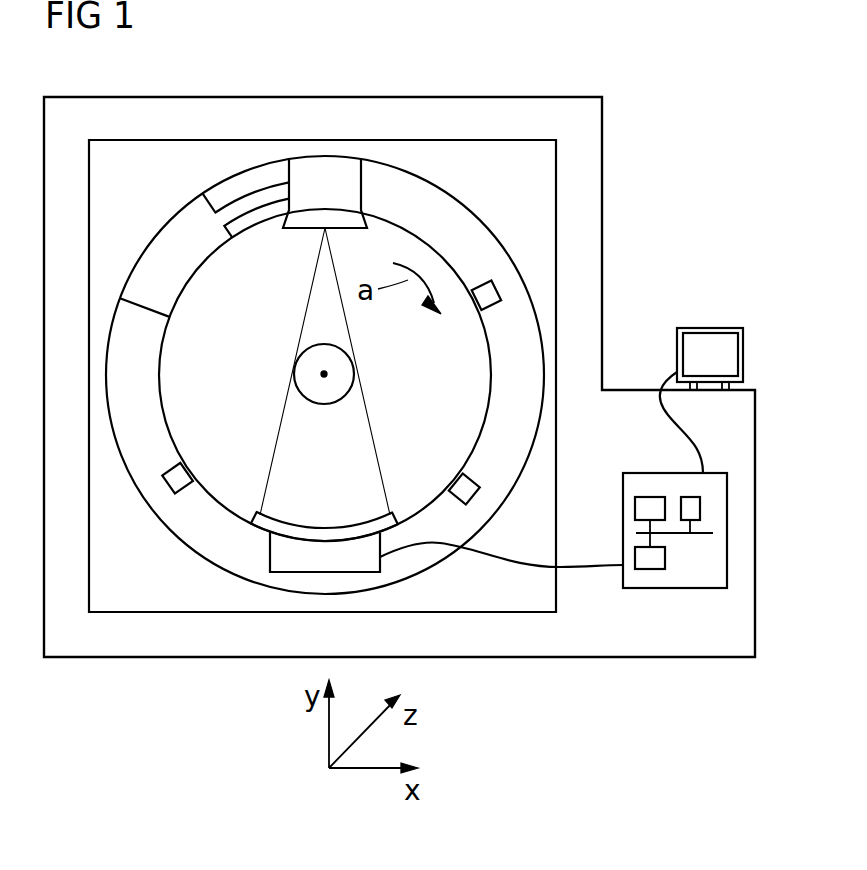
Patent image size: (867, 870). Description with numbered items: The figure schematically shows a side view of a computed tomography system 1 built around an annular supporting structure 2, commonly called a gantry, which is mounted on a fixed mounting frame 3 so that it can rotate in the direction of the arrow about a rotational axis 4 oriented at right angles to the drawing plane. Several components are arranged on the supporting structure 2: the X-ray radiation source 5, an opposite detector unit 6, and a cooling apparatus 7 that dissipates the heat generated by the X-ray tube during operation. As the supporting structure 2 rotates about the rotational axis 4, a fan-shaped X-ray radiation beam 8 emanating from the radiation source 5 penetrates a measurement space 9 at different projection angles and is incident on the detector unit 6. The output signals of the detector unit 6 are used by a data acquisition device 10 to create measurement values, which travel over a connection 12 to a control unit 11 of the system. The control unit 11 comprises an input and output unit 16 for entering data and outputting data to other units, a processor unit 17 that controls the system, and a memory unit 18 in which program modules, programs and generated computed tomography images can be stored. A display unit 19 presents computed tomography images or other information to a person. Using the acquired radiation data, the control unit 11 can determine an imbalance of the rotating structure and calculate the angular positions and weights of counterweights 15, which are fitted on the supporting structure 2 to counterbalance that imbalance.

The computed tomography system 1 is at (681, 163).
The annular supporting structure 2 is at (470, 228).
The fixed mounting frame 3 is at (602, 237).
The rotational axis 4 is at (330, 374).
The X-ray radiation source 5 is at (327, 165).
The detector unit 6 is at (290, 528).
The cooling apparatus 7 is at (160, 246).
The fan-shaped X-ray radiation beam 8 is at (286, 406).
The measurement space 9 is at (300, 372).
The data acquisition device 10 is at (345, 550).
The control unit 11 is at (685, 520).
The data line 12 is at (580, 568).
The counterweights 15 is at (482, 303).
The input and output unit 16 is at (635, 508).
The processor unit 17 is at (700, 508).
The memory unit 18 is at (650, 569).
The display unit 19 is at (706, 328).